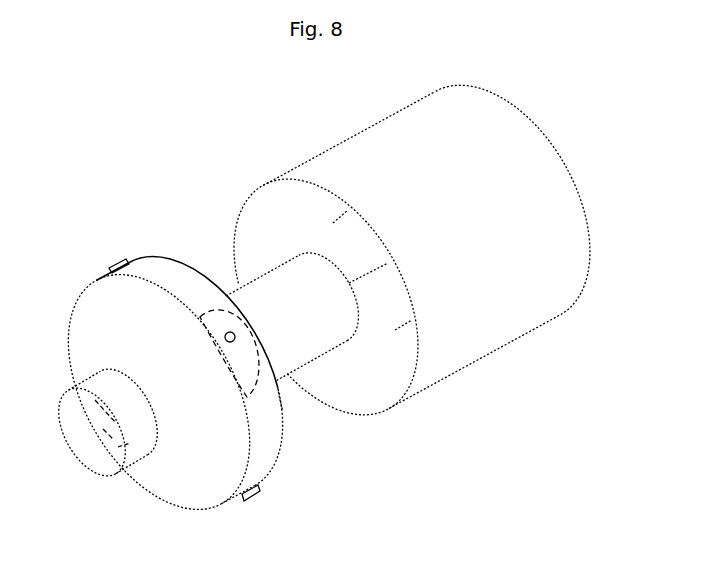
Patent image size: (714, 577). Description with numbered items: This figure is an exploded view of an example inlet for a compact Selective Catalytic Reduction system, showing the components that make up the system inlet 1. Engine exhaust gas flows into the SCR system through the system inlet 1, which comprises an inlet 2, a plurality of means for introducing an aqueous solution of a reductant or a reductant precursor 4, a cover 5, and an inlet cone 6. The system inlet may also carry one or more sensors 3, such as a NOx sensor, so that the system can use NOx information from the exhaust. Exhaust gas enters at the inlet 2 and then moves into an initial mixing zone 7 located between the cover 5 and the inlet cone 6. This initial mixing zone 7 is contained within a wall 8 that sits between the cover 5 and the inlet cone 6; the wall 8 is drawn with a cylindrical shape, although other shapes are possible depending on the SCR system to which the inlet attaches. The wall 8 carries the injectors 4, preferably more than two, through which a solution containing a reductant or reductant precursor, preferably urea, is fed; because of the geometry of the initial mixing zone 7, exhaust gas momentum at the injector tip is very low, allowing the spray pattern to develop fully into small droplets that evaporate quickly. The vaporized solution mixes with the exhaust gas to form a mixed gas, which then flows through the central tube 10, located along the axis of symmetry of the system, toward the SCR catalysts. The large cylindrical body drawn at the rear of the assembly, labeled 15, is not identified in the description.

The system inlet 1 is at (130, 230).
The inlet 2 is at (101, 428).
The sensor 3 is at (142, 440).
The means for introducing an aqueous solution of a reductant or a reductant precurso 4 is at (120, 264).
The cover 5 is at (159, 392).
The inlet cone 6 is at (273, 430).
The initial mixing zone 7 is at (212, 413).
The wall 8 is at (128, 260).
The central tube 10 is at (307, 317).
The housing cylinder 15 is at (412, 250).